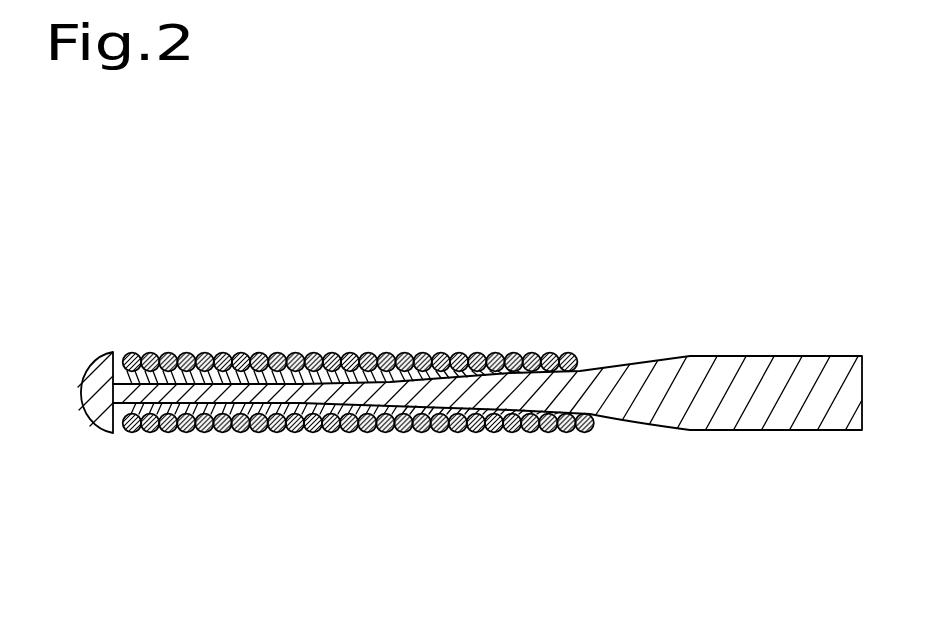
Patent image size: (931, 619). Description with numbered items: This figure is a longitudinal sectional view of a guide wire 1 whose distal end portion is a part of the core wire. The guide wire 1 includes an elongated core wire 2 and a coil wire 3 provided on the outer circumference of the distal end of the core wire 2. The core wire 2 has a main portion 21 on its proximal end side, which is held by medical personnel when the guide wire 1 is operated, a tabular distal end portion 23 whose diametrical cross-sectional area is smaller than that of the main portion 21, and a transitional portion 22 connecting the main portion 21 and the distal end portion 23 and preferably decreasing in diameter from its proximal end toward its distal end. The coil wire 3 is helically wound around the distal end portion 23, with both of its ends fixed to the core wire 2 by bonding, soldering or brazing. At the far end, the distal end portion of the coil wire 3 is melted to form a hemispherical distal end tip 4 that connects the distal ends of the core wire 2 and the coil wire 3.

The guide wire 1 is at (486, 374).
The core wire 2 is at (492, 387).
The main portion 21 is at (798, 418).
The transitional portion 22 is at (412, 397).
The distal end portion 23 is at (160, 414).
The coil wire 3 is at (278, 355).
The distal end tip 4 is at (97, 355).